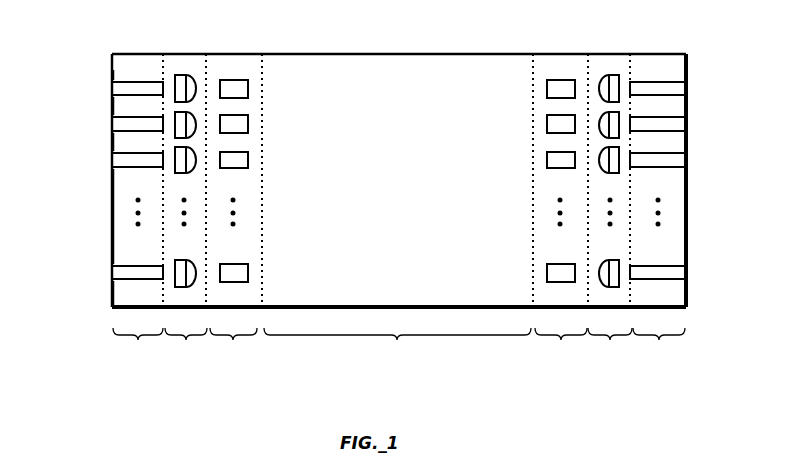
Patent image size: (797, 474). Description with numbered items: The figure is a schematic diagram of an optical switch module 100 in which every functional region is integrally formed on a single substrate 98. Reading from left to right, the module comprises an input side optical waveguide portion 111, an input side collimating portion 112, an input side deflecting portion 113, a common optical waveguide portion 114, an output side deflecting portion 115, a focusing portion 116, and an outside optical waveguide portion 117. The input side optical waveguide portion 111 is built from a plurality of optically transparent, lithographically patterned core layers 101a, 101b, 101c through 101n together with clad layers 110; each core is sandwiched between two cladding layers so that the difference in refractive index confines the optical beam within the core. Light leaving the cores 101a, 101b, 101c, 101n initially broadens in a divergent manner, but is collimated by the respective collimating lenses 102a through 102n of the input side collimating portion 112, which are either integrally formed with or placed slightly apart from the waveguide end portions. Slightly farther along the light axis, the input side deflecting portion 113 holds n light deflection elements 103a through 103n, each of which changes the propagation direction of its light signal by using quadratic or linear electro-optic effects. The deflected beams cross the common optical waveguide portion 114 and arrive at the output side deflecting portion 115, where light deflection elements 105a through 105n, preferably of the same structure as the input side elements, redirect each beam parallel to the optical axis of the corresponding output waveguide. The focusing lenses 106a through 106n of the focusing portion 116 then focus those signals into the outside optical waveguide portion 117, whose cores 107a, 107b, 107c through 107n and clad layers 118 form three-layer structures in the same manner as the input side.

The substrate 98 is at (380, 54).
The optical switch module 100 is at (250, 371).
The core 101a is at (112, 88).
The core 101b is at (112, 124).
The core 101c is at (112, 160).
The core 101n is at (112, 272).
The collimating lens 102a is at (180, 75).
The collimating lens 102n is at (185, 260).
The light deflection element 103a is at (240, 80).
The light deflection element 103n is at (248, 273).
The light deflection element 105a is at (558, 78).
The light deflection element 105n is at (547, 272).
The focusing lens 106a is at (610, 75).
The focusing lens 106n is at (610, 262).
The core 107a is at (688, 88).
The core 107b is at (688, 125).
The core 107c is at (688, 160).
The core 107n is at (688, 270).
The clad layer 110 is at (145, 66).
The input side optical waveguide portion 111 is at (138, 346).
The input side collimating portion 112 is at (186, 346).
The input side deflecting portion 113 is at (233, 346).
The common optical waveguide portion 114 is at (397, 347).
The output side deflecting portion 115 is at (561, 346).
The focusing portion 116 is at (610, 346).
The outside optical waveguide portion 117 is at (659, 346).
The clad layer 118 is at (655, 70).